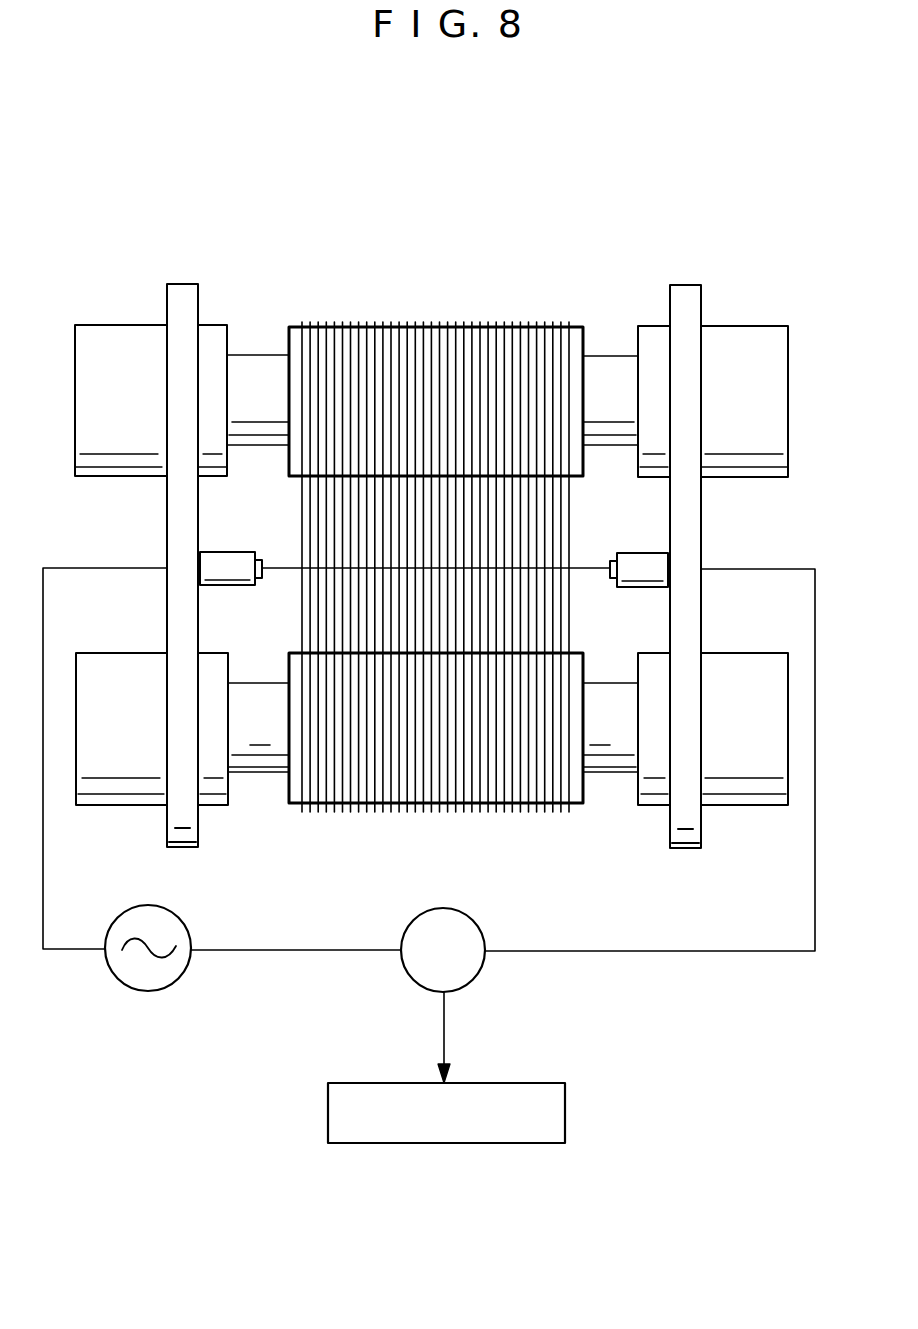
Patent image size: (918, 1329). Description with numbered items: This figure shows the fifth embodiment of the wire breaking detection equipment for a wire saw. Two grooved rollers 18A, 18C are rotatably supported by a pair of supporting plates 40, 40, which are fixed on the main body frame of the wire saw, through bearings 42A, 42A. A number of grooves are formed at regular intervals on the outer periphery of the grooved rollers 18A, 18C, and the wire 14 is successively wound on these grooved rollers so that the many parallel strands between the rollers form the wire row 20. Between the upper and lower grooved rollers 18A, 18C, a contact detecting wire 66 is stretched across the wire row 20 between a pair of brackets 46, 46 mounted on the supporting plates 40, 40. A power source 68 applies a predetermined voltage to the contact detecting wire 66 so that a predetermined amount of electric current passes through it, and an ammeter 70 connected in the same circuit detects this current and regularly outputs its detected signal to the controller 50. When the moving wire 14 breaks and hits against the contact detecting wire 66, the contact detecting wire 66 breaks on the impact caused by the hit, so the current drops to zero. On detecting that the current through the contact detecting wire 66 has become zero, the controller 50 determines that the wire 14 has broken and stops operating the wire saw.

The wire 14 is at (572, 518).
The grooved roller 18A is at (578, 326).
The grooved roller 18C is at (289, 803).
The wire row 20 is at (434, 566).
The supporting plate 40 is at (180, 290).
The bearing 42A is at (120, 325).
The bracket 46 is at (230, 560).
The controller 50 is at (513, 1083).
The contact detecting wire 66 is at (565, 590).
The power source 68 is at (150, 992).
The ammeter 70 is at (480, 922).